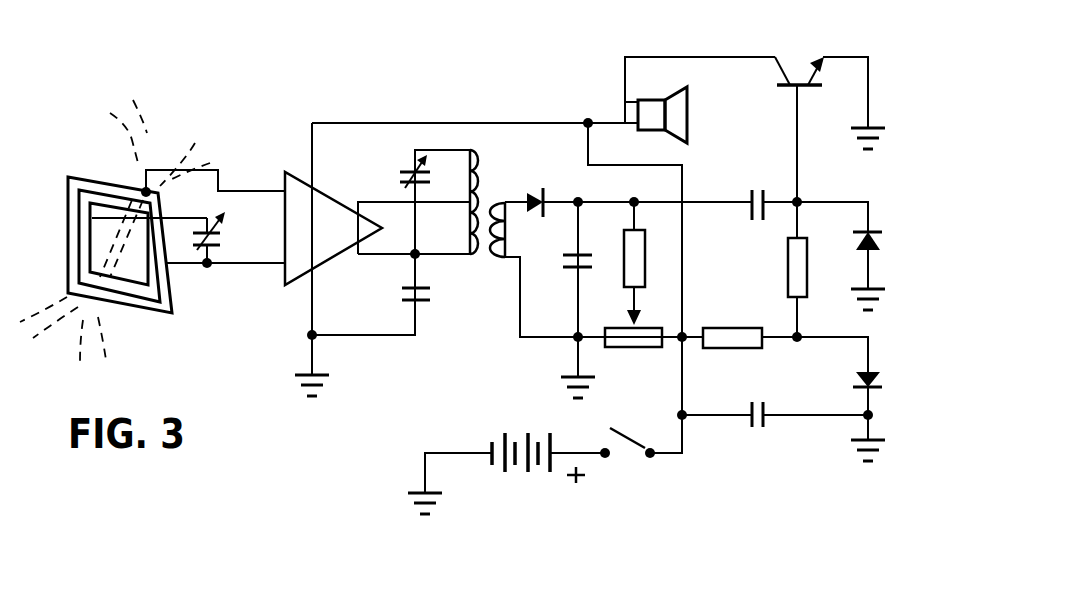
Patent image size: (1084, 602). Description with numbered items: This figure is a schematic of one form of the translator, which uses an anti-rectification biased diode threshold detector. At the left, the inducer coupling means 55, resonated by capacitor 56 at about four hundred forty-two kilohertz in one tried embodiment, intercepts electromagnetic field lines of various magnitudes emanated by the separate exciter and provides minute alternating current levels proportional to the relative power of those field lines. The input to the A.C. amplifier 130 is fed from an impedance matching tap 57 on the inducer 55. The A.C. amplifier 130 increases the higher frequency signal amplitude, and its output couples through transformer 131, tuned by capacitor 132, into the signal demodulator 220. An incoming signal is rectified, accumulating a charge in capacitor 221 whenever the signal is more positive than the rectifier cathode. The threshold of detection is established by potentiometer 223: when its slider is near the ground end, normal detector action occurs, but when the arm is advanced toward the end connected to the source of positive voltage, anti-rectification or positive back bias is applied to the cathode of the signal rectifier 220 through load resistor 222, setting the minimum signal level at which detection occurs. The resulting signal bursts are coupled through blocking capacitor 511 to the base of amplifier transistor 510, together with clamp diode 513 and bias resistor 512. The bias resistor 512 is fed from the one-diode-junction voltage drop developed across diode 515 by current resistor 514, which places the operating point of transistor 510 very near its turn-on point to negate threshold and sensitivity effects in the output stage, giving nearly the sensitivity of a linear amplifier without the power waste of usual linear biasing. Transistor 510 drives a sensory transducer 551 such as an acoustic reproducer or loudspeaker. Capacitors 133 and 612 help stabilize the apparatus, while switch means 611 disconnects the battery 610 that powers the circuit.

The inducer coupling means 55 is at (90, 178).
The impedance matching tap 57 is at (137, 180).
The capacitor 56 is at (193, 268).
The A.C. amplifier 130 is at (302, 197).
The transformer 131 is at (478, 172).
The capacitor 132 is at (398, 170).
The capacitor 133 is at (397, 298).
The signal demodulator 220 is at (562, 178).
The capacitor 221 is at (556, 260).
The load resistor 222 is at (658, 268).
The potentiometer 223 is at (605, 358).
The amplifier transistor 510 is at (795, 60).
The blocking capacitor 511 is at (740, 192).
The bias resistor 512 is at (783, 260).
The clamp diode 513 is at (883, 217).
The current resistor 514 is at (747, 355).
The diode 515 is at (855, 398).
The sensory transducer 551 is at (723, 98).
The battery 610 is at (527, 430).
The switch means 611 is at (660, 477).
The capacitor 612 is at (743, 432).